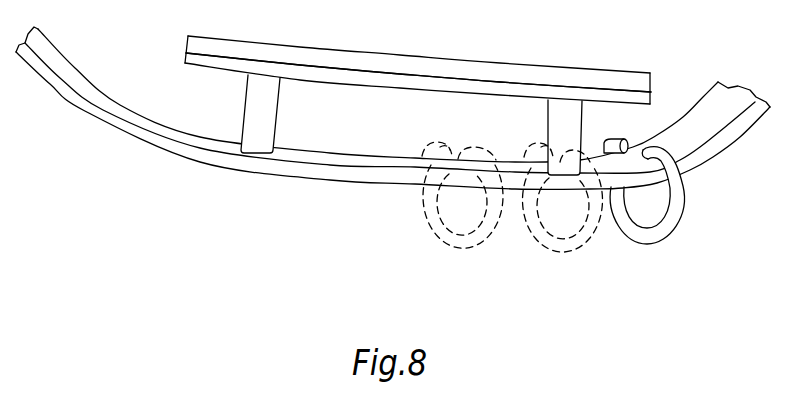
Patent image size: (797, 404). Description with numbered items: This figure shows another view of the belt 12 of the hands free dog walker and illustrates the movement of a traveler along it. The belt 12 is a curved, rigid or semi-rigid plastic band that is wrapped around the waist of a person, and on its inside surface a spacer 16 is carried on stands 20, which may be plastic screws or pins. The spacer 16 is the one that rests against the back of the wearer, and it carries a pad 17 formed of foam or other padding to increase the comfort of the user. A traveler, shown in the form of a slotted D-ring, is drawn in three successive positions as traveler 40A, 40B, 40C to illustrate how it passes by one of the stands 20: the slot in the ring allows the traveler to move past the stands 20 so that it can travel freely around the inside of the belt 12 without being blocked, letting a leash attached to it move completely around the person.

The belt 12 is at (153, 147).
The spacer 16 is at (222, 66).
The pad 17 is at (427, 63).
The stands 20 is at (276, 104).
The traveler 40A is at (652, 241).
The traveler 40B is at (574, 248).
The traveler 40C is at (476, 244).